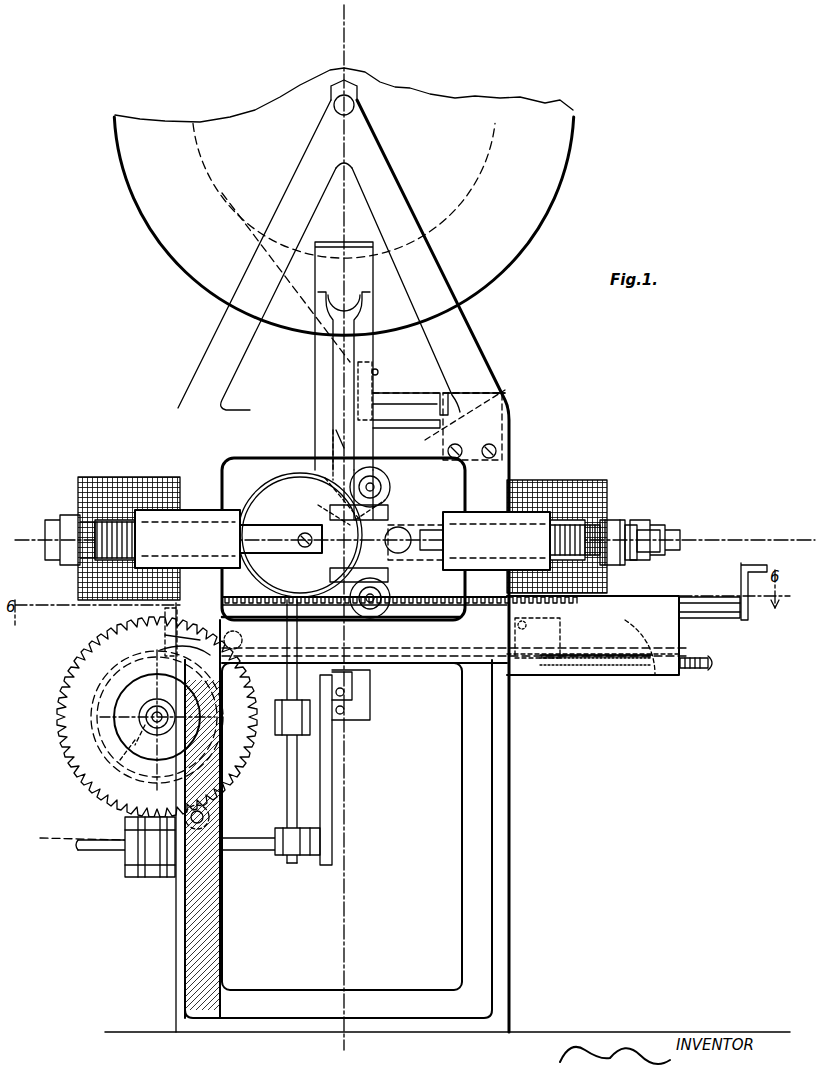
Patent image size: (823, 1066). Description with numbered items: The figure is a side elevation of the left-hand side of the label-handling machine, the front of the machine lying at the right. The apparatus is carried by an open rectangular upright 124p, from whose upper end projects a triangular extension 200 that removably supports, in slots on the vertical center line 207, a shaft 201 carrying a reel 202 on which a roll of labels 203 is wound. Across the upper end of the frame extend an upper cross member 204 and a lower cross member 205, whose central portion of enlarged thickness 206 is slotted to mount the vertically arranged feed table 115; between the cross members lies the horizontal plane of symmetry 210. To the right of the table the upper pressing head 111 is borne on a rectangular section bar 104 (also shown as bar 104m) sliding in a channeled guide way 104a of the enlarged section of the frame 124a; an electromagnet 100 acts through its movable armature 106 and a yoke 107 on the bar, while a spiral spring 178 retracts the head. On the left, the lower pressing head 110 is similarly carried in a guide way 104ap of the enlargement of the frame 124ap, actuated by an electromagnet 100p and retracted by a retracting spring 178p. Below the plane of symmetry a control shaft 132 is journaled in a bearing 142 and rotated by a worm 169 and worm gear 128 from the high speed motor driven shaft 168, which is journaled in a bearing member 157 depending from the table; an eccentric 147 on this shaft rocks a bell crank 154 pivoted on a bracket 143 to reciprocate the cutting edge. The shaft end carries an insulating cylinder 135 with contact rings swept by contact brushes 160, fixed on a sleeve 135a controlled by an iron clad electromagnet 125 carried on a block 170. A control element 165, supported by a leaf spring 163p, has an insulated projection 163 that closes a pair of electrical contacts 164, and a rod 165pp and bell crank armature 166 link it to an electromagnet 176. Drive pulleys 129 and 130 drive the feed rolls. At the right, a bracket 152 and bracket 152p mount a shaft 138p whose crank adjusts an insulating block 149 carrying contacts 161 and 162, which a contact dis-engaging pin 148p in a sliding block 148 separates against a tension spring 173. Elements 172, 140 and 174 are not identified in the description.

The center line 207 is at (348, 40).
The shaft 201 is at (350, 96).
The reel 202 is at (520, 108).
The roll of labels 203 is at (222, 193).
The triangular extension 200 is at (430, 262).
The electromagnet 176 is at (322, 365).
The central portion of enlarged thickness 206 is at (335, 430).
The electrically insulated projection 163 is at (375, 388).
The electrical contacts 164 is at (412, 395).
The leaf spring 163p is at (440, 405).
The control element 165 is at (395, 430).
The upper cross member 204 is at (425, 440).
The drive pulley 129 is at (500, 405).
The lower pressing head 110 is at (270, 520).
The bell crank armature 166 is at (340, 448).
The rod 165pp is at (330, 505).
The drive pulley 130 is at (400, 612).
The upper pressing head 111 is at (420, 575).
The rectangular section bar 104m is at (437, 550).
The horizontal plane of symmetry 210 is at (50, 532).
The electromagnet 100 is at (585, 515).
The channeled guide way 104a is at (565, 500).
The enlarged section of the frame 124a is at (515, 535).
The spiral spring 178 is at (565, 560).
The rectangular section bar 104 is at (612, 522).
The yoke 107 is at (632, 540).
The movable armature 106 is at (650, 540).
The electromagnet 100p is at (120, 482).
The guide way 104ap is at (150, 492).
The enlargement of the frame 124ap is at (152, 525).
The retracting spring 178p is at (105, 562).
The frame bar 172 is at (400, 660).
The lower cross member 205 is at (430, 650).
The upright 124p is at (483, 892).
The block 170 is at (202, 819).
The iron clad electromagnet 125 is at (85, 710).
The cylinder 135 is at (150, 722).
The control shaft 132 is at (145, 725).
The sleeve 135a is at (130, 740).
The worm gear 128 is at (100, 778).
The bearing 142 is at (125, 800).
The high speed motor driven shaft 168 is at (100, 847).
The worm 169 is at (140, 858).
The bell crank 154 is at (290, 783).
The bracket 143 is at (283, 740).
The eccentric 147 is at (305, 858).
The bearing member 157 is at (328, 785).
The feed table 115 is at (345, 730).
The bracket 152p is at (165, 625).
The pawl 140 is at (165, 635).
The contact brush 160 is at (180, 648).
The bracket 152 is at (672, 675).
The shaft 138p is at (640, 612).
The screw 174 is at (705, 665).
The contact 161 is at (555, 675).
The block 148 is at (520, 680).
The contact dis-engaging pin 148p is at (548, 680).
The contact 162 is at (590, 670).
The block of insulating material 149 is at (628, 672).
The tension spring 173 is at (580, 675).